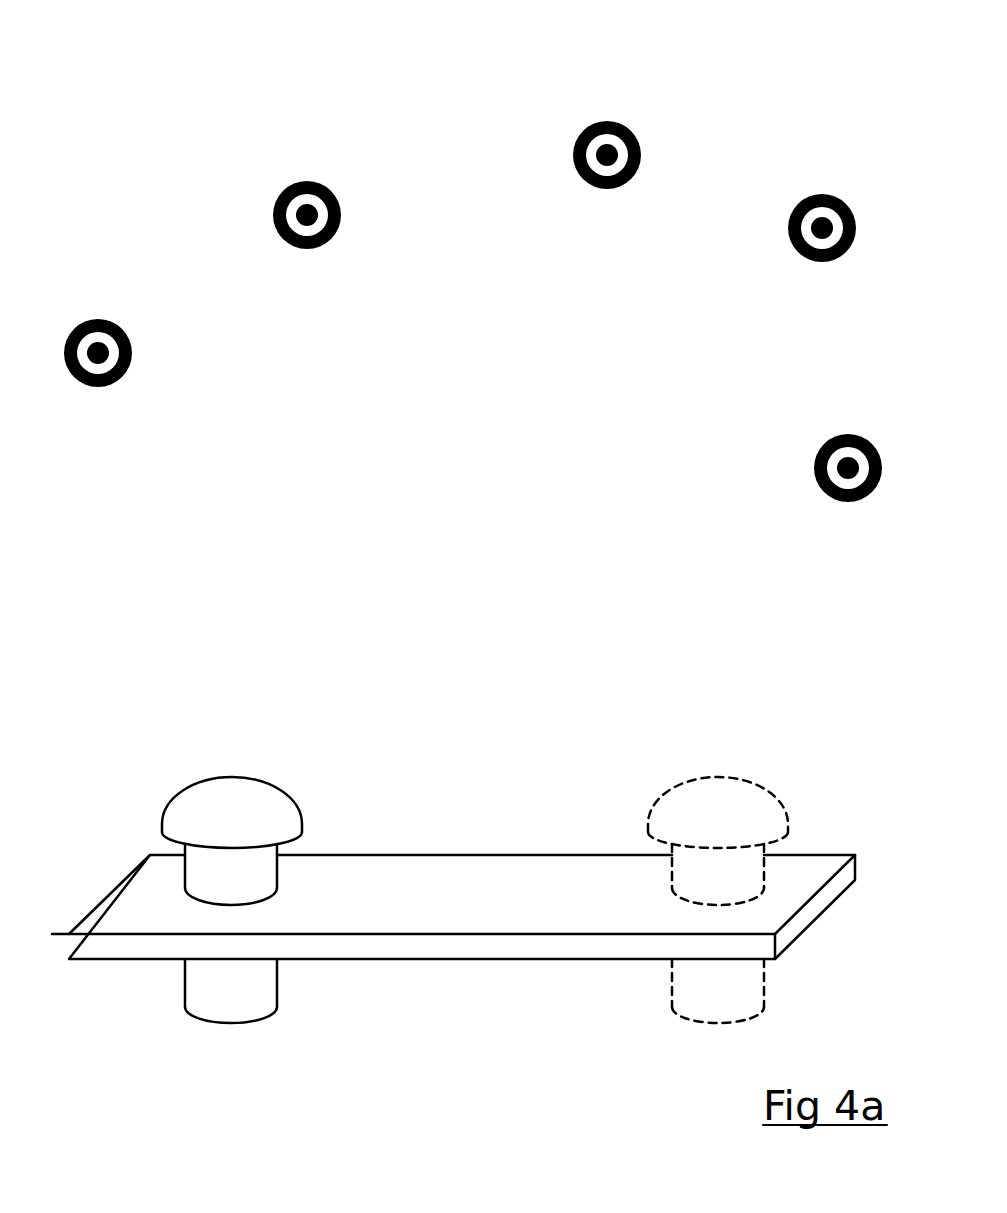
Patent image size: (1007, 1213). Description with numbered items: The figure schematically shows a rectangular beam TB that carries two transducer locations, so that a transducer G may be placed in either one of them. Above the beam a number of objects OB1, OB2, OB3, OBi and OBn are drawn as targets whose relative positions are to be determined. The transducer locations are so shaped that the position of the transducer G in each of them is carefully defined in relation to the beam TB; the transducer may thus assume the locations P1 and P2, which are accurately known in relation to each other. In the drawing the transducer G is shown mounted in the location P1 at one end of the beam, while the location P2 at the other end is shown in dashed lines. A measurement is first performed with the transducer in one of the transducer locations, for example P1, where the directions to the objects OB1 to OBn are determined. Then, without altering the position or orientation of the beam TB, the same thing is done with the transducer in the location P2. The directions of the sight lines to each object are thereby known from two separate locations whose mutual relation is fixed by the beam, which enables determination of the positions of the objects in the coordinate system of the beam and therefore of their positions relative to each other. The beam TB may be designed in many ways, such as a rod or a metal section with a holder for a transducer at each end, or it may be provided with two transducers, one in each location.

The object OB1 is at (78, 322).
The object OB2 is at (281, 183).
The object OB3 is at (590, 121).
The object OBi is at (810, 195).
The object OBn is at (828, 435).
The beam TB is at (473, 877).
The transducer location P1 is at (163, 840).
The transducer location P2 is at (788, 842).
The transducer G is at (717, 995).